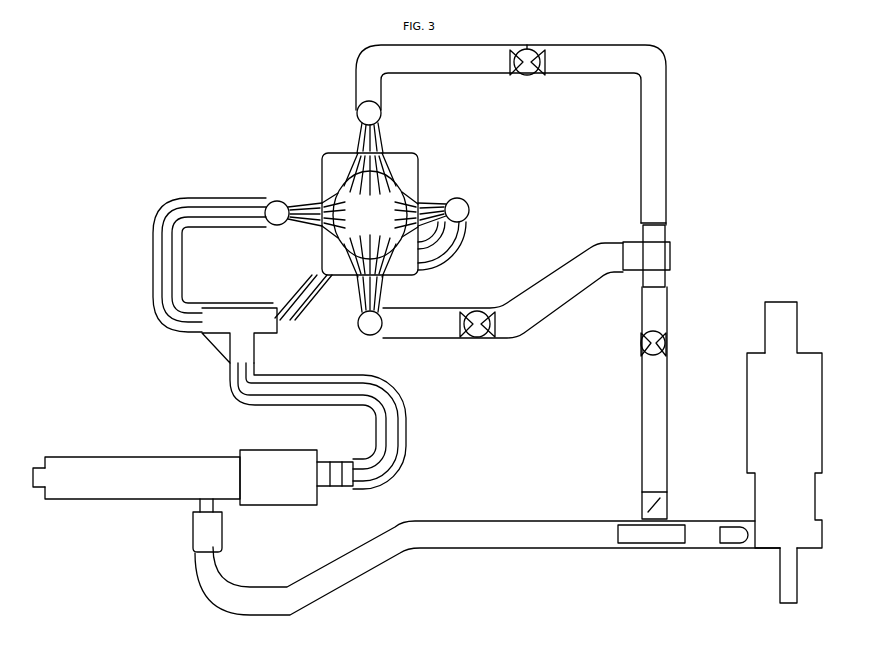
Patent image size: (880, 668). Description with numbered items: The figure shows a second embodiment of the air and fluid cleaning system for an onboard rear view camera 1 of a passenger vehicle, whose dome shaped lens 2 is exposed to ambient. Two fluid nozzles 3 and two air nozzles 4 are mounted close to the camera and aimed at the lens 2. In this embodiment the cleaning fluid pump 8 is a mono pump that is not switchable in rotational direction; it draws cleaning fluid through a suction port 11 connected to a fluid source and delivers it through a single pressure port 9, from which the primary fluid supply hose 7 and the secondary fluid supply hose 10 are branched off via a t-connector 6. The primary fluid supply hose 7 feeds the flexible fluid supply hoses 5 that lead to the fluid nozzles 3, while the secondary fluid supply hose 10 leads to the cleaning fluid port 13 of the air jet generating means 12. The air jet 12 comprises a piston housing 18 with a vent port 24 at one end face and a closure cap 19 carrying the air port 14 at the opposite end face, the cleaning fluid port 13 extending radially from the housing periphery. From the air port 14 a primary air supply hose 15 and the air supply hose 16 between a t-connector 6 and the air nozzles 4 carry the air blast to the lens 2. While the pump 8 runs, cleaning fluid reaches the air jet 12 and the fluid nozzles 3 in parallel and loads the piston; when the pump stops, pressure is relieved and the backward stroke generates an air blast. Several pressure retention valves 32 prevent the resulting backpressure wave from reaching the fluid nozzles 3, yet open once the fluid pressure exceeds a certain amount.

The rear view camera 1 is at (410, 135).
The lens 2 is at (386, 190).
The fluid nozzles 3 is at (358, 108).
The air nozzles 4 is at (275, 198).
The fluid supply hoses 5 is at (666, 130).
The t-connector 6 is at (668, 250).
The primary fluid supply hose 7 is at (672, 415).
The cleaning fluid pump 8 is at (225, 318).
The pressure port 9 is at (745, 548).
The secondary fluid supply hose 10 is at (152, 290).
The suction port 11 is at (782, 603).
The air jet generating means 12 is at (142, 485).
The cleaning fluid port 13 is at (195, 540).
The air port 14 is at (337, 490).
The primary air supply hose 15 is at (408, 413).
The air supply hose 16 is at (310, 328).
The piston housing 18 is at (793, 440).
The closure cap 19 is at (505, 550).
The vent port 24 is at (38, 497).
The pressure retention valves 32 is at (525, 80).